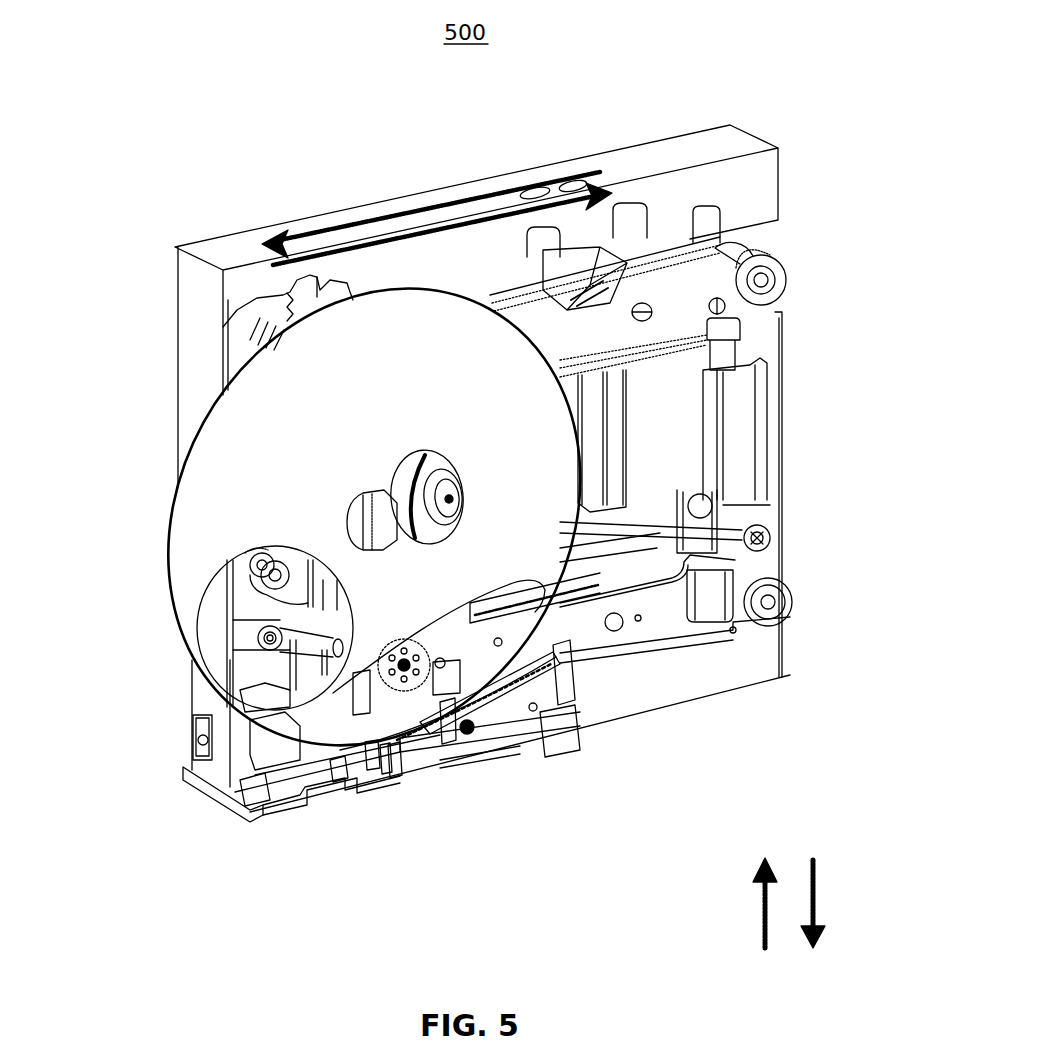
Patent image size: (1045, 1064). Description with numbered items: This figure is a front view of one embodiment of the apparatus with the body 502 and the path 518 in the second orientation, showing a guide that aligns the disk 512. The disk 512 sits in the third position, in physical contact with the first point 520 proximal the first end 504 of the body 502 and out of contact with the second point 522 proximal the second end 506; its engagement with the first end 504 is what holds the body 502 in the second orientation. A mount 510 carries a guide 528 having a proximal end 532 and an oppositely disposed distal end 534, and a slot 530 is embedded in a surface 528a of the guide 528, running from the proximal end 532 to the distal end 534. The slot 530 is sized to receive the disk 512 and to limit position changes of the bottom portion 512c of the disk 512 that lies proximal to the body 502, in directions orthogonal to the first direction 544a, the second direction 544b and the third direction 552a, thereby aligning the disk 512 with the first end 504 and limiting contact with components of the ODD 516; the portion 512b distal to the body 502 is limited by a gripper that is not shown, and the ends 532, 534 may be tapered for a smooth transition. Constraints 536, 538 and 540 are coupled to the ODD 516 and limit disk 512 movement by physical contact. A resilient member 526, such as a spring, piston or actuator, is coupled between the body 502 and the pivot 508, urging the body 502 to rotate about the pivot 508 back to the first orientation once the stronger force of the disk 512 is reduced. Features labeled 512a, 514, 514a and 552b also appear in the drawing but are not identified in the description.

The body 502 is at (573, 707).
The first end 504 is at (347, 728).
The second end 506 is at (564, 680).
The pivot 508 is at (467, 740).
The mount 510 is at (508, 742).
The disk 512 is at (543, 522).
The disc hub 512a is at (350, 503).
The portion of the disk distal to the body 512b is at (395, 318).
The bottom portion of the disk 512c is at (383, 621).
The spindle 514 is at (453, 488).
The spindle hub 514a is at (450, 475).
The ODD 516 is at (482, 473).
The path 518 is at (447, 722).
The first point 520 is at (393, 750).
The second point 522 is at (540, 687).
The resilient member 526 is at (393, 773).
The guide 528 is at (305, 783).
The surface of the guide 528a is at (340, 757).
The slot 530 is at (253, 810).
The proximal end 532 is at (205, 782).
The distal end 534 is at (370, 750).
The constraint 536 is at (378, 636).
The constraint 538 is at (258, 562).
The constraint 540 is at (633, 263).
The first direction 544a is at (462, 222).
The second direction 544b is at (558, 181).
The third direction 552a is at (763, 900).
The direction arrow 552b is at (815, 902).